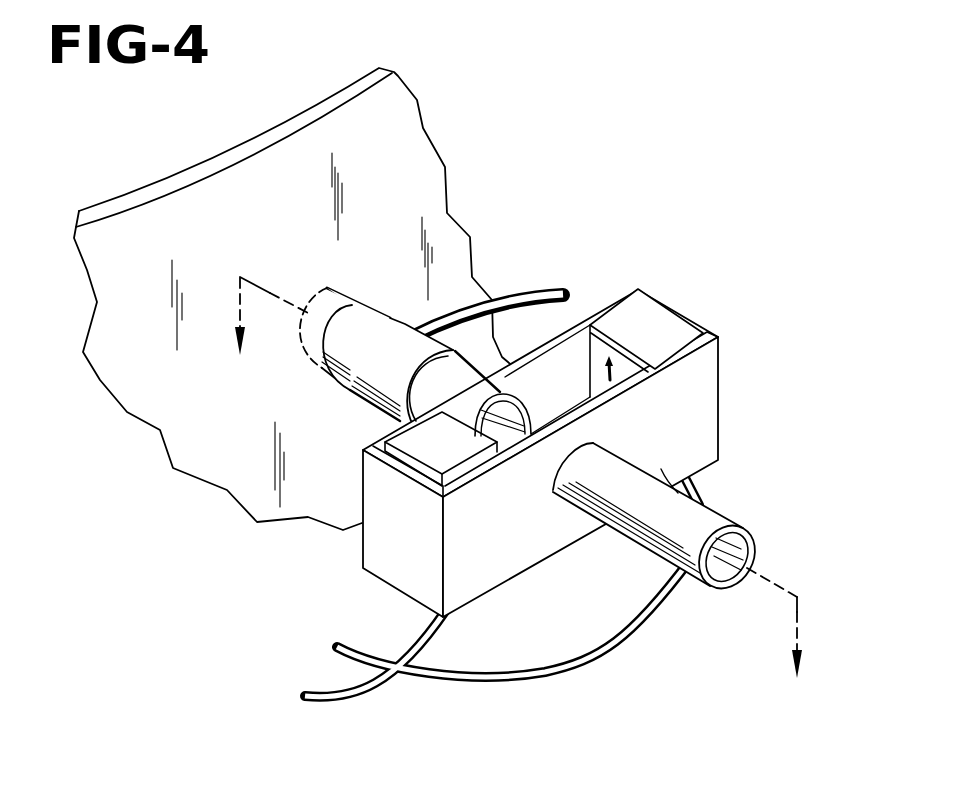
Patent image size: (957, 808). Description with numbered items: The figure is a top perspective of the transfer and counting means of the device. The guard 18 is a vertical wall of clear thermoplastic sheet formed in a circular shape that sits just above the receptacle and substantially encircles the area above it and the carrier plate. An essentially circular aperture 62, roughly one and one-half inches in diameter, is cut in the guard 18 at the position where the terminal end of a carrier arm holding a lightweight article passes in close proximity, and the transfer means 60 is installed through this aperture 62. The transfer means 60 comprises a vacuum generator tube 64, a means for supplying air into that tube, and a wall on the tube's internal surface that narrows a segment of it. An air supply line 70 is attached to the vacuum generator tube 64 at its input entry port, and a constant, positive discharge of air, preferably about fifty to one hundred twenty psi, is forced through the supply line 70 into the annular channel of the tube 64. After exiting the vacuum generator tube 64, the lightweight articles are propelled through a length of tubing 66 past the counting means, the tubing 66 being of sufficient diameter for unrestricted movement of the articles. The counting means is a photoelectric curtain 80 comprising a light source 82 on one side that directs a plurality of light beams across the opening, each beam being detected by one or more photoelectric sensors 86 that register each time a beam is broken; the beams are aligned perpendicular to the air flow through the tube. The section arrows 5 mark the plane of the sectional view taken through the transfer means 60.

The section line 5- 5 is at (519, 497).
The guard 18 is at (383, 143).
The transfer means 60 is at (329, 417).
The aperture 62 is at (323, 292).
The vacuum generator tube 64 is at (380, 355).
The tubing 66 is at (435, 387).
The air supply line 70 is at (508, 297).
The photoelectric curtain 80 is at (740, 376).
The light source 82 is at (420, 445).
The photoelectric sensors 86 is at (640, 322).